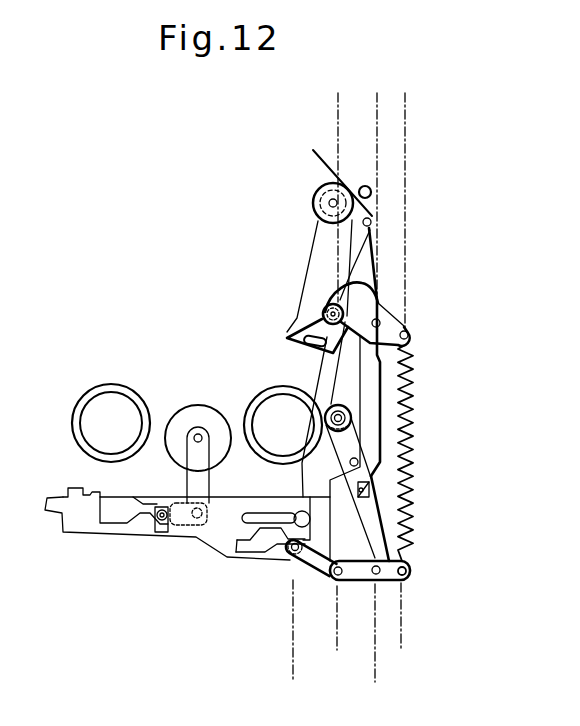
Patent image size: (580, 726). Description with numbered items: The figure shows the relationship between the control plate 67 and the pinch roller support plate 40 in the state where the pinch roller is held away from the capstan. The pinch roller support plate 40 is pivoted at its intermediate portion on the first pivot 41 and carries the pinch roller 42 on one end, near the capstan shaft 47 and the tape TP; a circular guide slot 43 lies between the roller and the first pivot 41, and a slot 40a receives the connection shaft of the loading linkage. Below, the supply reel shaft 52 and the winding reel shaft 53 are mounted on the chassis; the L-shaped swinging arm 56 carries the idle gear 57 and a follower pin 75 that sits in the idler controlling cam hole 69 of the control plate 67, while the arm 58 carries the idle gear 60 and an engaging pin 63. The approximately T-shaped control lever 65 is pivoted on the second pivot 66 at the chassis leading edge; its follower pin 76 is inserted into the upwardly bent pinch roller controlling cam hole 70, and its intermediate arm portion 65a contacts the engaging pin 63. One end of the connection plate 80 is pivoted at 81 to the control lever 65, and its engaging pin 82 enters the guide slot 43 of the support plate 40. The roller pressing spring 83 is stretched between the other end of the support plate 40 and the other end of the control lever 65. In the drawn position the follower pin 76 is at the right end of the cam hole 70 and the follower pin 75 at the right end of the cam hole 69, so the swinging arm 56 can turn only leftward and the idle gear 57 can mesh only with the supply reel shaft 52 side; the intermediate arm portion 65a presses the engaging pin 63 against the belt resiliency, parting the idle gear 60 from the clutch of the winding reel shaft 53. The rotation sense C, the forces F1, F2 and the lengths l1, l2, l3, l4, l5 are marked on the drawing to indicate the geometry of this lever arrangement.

The pinch roller support plate 40 is at (314, 252).
The slot 40a is at (287, 346).
The first pivot 41 is at (381, 320).
The pinch roller 42 is at (314, 213).
The circular guide slot 43 is at (380, 292).
The capstan shaft 47 is at (366, 186).
The supply reel shaft 52 is at (86, 392).
The winding reel shaft 53 is at (256, 400).
The swinging arm 56 is at (186, 490).
The idle gear 57 is at (185, 417).
The arm 58 is at (372, 472).
The idle gear 60 is at (337, 404).
The engaging pin 63 is at (371, 490).
The control lever 65 is at (412, 568).
The intermediate arm portion 65a is at (375, 530).
The second pivot 66 is at (378, 576).
The control plate 67 is at (72, 535).
The idler controlling cam hole 69 is at (113, 517).
The pinch roller controlling cam hole 70 is at (234, 560).
The follower pin 75 is at (158, 530).
The follower pin 76 is at (288, 560).
The connection plate 80 is at (412, 355).
The pivot 81 is at (334, 578).
The engaging pin 82 is at (326, 306).
The roller pressing spring 83 is at (405, 533).
The tape TP is at (366, 262).
The rotation direction C is at (270, 310).
The force F1 is at (442, 358).
The force F2 is at (275, 588).
The length l1 is at (377, 105).
The length l2 is at (408, 105).
The length l3 is at (375, 637).
The length l4 is at (401, 637).
The length l5 is at (375, 675).